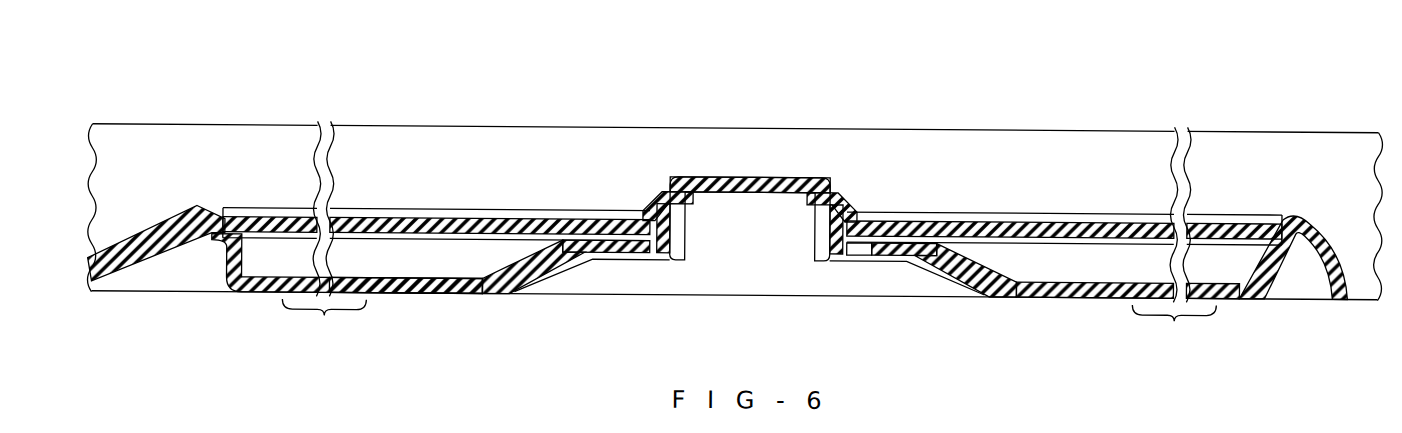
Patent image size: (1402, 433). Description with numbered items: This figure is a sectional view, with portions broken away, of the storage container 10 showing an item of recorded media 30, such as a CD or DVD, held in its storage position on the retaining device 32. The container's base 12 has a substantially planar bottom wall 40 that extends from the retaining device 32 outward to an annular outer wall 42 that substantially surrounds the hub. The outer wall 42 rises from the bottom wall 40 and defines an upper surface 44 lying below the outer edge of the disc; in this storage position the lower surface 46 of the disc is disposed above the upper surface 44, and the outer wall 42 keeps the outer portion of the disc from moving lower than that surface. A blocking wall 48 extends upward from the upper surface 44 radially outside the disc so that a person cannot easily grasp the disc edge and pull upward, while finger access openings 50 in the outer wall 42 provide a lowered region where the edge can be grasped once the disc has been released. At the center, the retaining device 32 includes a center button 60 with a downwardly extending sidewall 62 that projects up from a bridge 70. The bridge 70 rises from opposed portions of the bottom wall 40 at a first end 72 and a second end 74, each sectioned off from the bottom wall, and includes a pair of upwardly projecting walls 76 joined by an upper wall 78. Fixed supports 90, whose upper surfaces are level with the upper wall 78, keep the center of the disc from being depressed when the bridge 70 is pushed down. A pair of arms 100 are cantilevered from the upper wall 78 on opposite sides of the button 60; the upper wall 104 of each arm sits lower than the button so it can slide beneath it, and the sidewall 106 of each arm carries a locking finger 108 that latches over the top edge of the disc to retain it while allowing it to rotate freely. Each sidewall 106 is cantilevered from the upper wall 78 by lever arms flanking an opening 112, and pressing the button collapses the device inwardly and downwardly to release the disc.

The storage container 10 is at (1002, 95).
The base 12 is at (445, 126).
The item of recorded media 30 is at (1013, 209).
The retaining device 32 is at (897, 188).
The bottom wall 40 is at (397, 294).
The outer wall 42 is at (1290, 282).
The upper surface 44 is at (1216, 242).
The lower surface 46 is at (1100, 242).
The blocking wall 48 is at (1300, 220).
The finger access openings 50 is at (189, 221).
The center button 60 is at (753, 177).
The sidewall 62 is at (767, 233).
The bridge 70 is at (940, 244).
The first end 72 is at (1040, 290).
The second end 74 is at (480, 281).
The upwardly projecting walls 76 is at (525, 265).
The upper wall 78 is at (587, 242).
The fixed supports 90 is at (738, 280).
The arms 100 is at (665, 186).
The upper wall 104 is at (806, 189).
The sidewall 106 is at (663, 242).
The locking finger 108 is at (650, 206).
The opening 112 is at (637, 255).